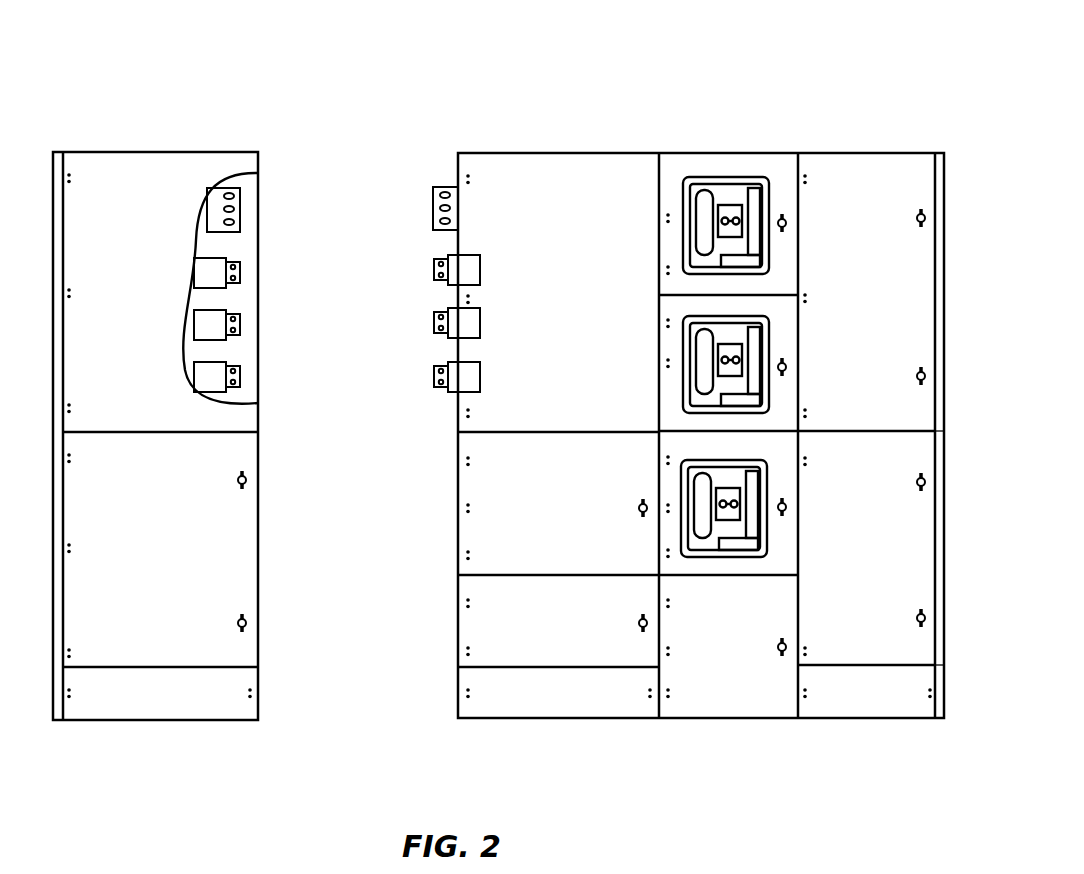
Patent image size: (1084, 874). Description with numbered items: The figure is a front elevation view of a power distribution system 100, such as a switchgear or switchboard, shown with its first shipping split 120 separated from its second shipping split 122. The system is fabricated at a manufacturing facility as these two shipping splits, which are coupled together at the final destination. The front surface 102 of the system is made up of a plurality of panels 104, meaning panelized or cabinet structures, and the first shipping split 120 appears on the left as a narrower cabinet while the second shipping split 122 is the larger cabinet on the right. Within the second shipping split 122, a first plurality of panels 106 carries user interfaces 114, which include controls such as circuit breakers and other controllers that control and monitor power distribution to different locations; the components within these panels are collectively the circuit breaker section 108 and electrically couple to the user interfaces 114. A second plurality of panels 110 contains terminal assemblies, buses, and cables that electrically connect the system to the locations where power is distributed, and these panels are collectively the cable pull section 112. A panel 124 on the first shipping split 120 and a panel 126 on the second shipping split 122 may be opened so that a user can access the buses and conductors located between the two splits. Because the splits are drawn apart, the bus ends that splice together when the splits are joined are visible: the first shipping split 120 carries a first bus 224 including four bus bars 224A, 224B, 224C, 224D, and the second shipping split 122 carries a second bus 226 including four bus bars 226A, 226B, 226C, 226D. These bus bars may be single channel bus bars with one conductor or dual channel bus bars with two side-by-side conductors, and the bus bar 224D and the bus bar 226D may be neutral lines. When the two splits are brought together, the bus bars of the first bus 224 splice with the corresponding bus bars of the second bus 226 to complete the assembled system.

The power distribution system 100 is at (806, 80).
The front surface 102 is at (146, 182).
The panels 104 is at (781, 185).
The first plurality of panels 106 is at (707, 153).
The circuit breaker section 108 is at (727, 718).
The second plurality of panels 110 is at (878, 153).
The cable pull section 112 is at (870, 665).
The user interfaces 114 is at (720, 174).
The first shipping split 120 is at (240, 152).
The second shipping split 122 is at (596, 152).
The panel 124 is at (153, 318).
The panel 126 is at (581, 322).
The first bus 224 is at (216, 396).
The bus bar 224A is at (240, 280).
The bus bar 224B is at (240, 333).
The bus bar 224C is at (240, 386).
The bus bar 224D is at (240, 214).
The second bus 226 is at (450, 396).
The bus bar 226A is at (434, 270).
The bus bar 226B is at (434, 333).
The bus bar 226C is at (434, 387).
The bus bar 226D is at (433, 210).